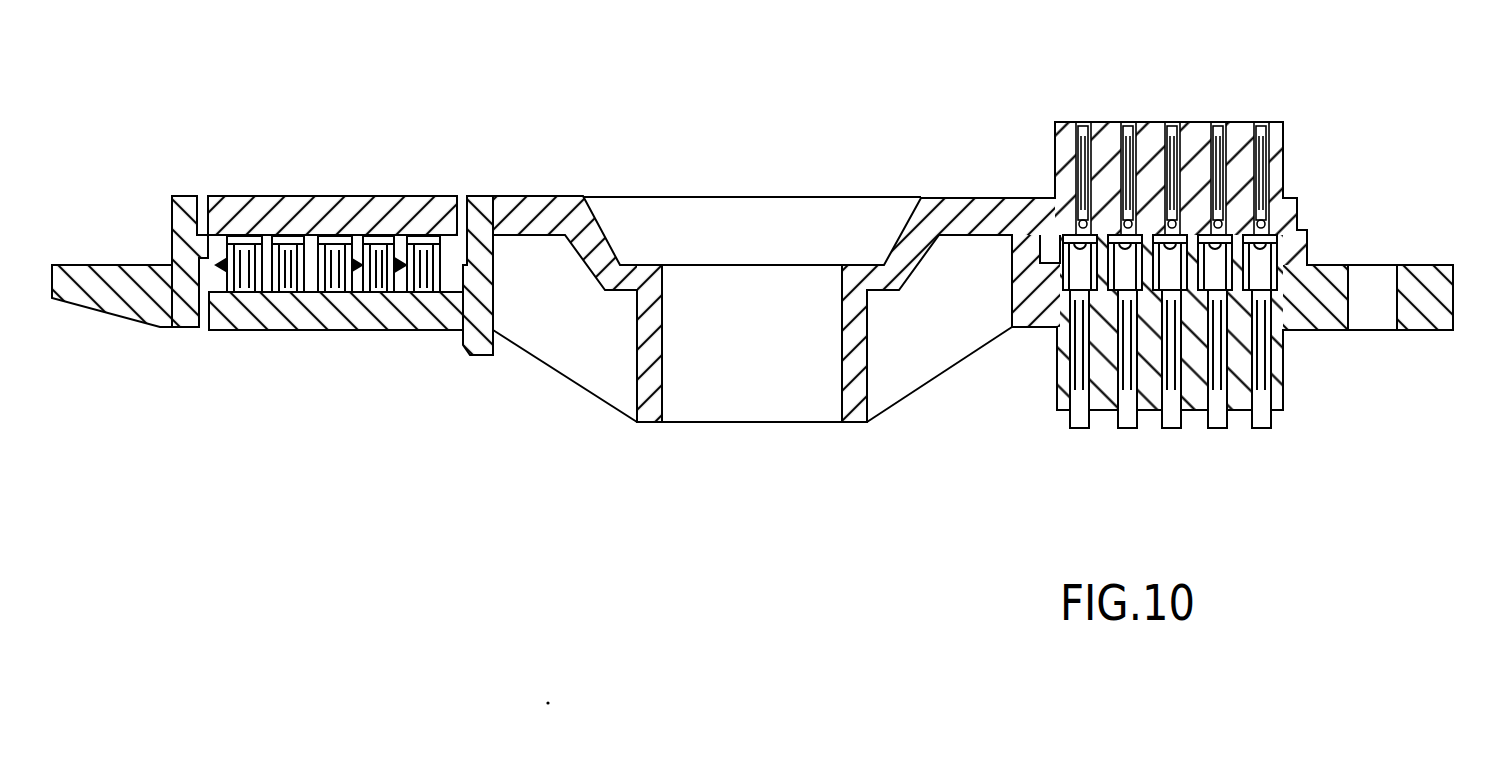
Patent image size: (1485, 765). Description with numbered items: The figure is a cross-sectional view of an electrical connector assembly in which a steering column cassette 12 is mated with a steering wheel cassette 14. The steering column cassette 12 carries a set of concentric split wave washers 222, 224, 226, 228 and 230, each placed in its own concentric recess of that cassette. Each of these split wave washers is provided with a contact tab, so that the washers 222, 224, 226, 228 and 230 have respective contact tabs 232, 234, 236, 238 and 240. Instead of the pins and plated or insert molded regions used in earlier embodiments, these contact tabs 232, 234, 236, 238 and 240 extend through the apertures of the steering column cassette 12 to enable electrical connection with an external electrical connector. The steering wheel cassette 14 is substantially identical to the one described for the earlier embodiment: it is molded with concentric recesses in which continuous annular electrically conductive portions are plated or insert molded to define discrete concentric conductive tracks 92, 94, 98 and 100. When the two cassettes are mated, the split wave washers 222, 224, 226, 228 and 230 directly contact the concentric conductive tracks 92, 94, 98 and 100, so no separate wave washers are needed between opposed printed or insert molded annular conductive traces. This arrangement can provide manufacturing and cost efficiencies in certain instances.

The steering column cassette 12 is at (1295, 380).
The steering wheel cassette 14 is at (1305, 106).
The concentric conductive track 92 is at (1285, 262).
The concentric conductive track 94 is at (1193, 237).
The concentric conductive track 98 is at (1145, 237).
The concentric conductive track 100 is at (1062, 243).
The split wave washer 222 is at (242, 293).
The split wave washer 224 is at (293, 293).
The split wave washer 226 is at (320, 293).
The split wave washer 228 is at (365, 312).
The split wave washer 230 is at (423, 300).
The contact tab 232 is at (1070, 430).
The contact tab 234 is at (1122, 430).
The contact tab 236 is at (1165, 432).
The contact tab 238 is at (1212, 432).
The contact tab 240 is at (1263, 432).